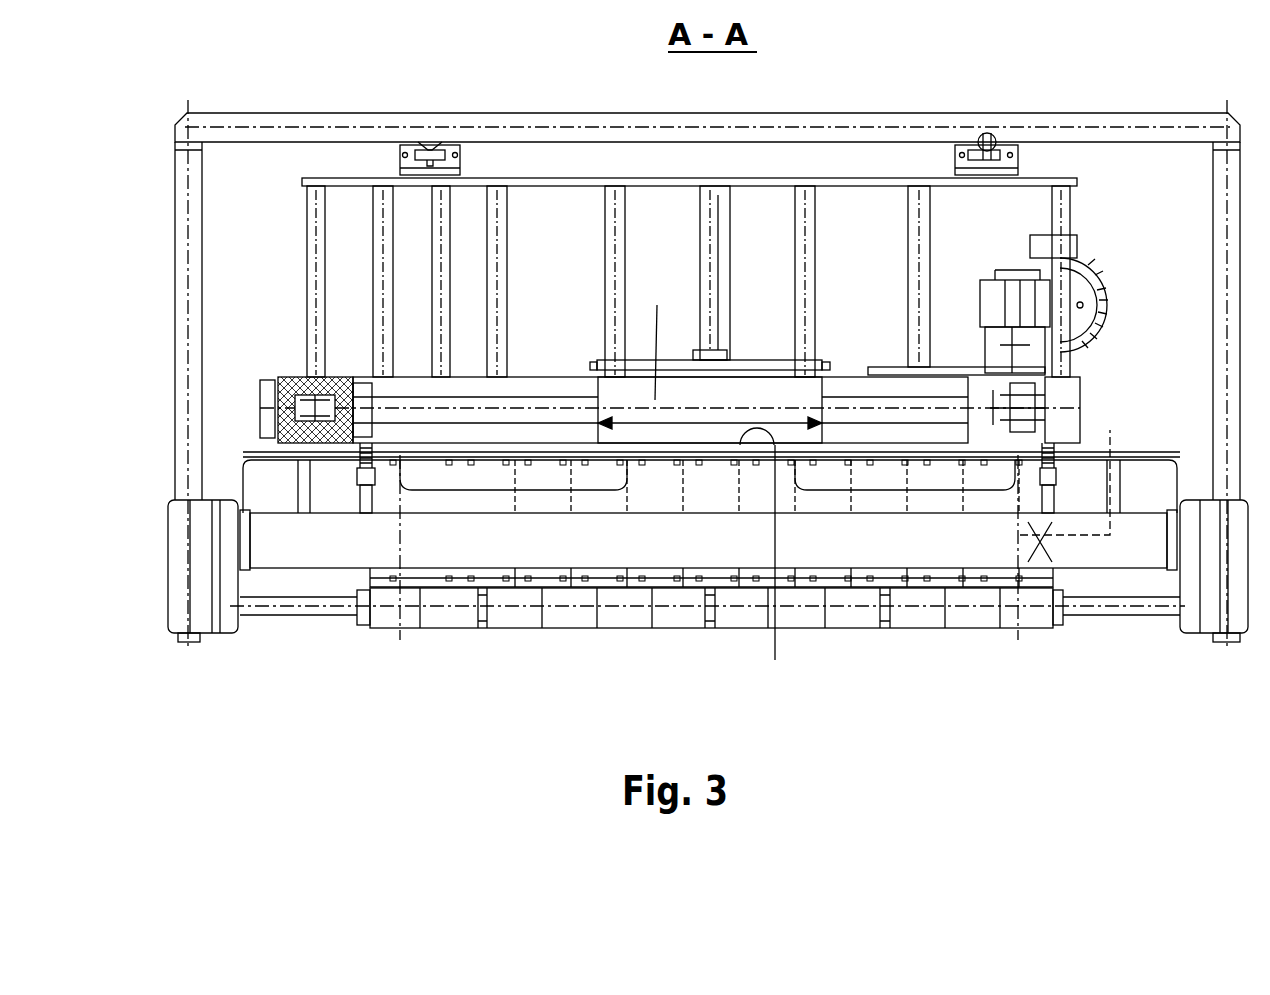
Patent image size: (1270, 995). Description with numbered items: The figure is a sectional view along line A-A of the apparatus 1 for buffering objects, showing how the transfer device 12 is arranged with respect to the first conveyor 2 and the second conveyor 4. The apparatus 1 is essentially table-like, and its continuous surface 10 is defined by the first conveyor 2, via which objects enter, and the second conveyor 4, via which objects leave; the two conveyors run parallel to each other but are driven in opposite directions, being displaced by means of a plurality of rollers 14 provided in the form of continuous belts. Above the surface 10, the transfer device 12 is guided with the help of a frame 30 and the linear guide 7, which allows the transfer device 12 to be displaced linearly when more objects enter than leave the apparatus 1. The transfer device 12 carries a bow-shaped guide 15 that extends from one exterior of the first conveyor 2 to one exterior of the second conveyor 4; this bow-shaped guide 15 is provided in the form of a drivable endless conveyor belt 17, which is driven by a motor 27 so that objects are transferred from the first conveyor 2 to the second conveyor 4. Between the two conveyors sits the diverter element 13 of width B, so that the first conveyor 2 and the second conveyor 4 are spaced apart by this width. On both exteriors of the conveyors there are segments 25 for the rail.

The apparatus for buffering objects 1 is at (651, 632).
The first conveyor 2 is at (440, 490).
The second conveyor 4 is at (925, 490).
The linear guide 7 is at (420, 150).
The surface 10 is at (768, 559).
The transfer device 12 is at (305, 256).
The diverter element 13 is at (778, 430).
The rollers 14 is at (290, 607).
The bow-shaped guide 15 is at (555, 378).
The drivable endless conveyor belt 17 is at (268, 400).
The segments 25 is at (360, 455).
The motor 27 is at (1097, 285).
The frame 30 is at (190, 295).